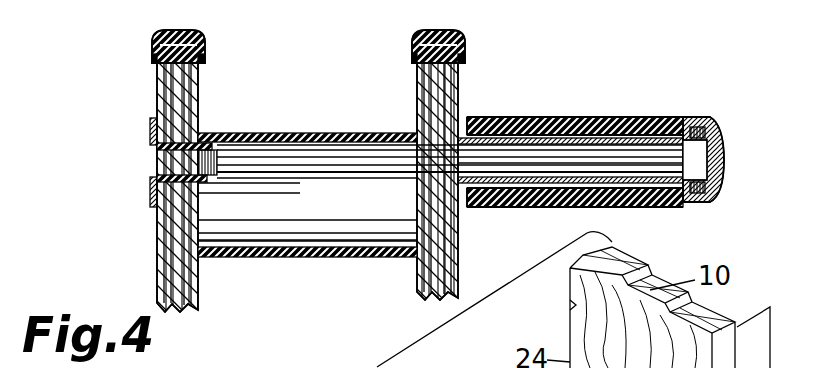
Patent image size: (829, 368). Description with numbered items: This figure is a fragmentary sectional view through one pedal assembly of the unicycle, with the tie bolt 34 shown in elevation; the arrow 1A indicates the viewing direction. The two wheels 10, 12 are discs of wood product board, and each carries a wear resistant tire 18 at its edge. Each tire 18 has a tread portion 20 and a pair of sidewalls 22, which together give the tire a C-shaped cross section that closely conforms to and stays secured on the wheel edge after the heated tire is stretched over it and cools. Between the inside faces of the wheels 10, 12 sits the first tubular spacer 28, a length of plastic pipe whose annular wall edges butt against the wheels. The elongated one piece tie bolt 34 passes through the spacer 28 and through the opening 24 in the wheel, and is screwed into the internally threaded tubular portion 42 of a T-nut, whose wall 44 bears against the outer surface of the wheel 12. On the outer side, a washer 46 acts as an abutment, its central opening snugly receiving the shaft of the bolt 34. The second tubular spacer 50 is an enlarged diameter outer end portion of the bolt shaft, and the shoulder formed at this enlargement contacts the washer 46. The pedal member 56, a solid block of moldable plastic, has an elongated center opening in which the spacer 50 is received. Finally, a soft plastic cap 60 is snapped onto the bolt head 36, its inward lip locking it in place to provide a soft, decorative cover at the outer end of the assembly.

The wheel 10 is at (452, 246).
The wheel 12 is at (157, 233).
The tire 18 is at (233, 47).
The tread portion 20 is at (195, 30).
The sidewalls 22 is at (146, 62).
The opening 24 is at (420, 170).
The first tubular spacer 28 is at (300, 132).
The tie bolt 34 is at (320, 166).
The bolt head 36 is at (722, 165).
The internally threaded tubular portion 42 is at (200, 209).
The wall 44 is at (153, 185).
The washer 46 is at (467, 116).
The second tubular spacer 50 is at (632, 140).
The pedal member 56 is at (575, 118).
The cap 60 is at (697, 117).
The viewing direction arrow 1A is at (292, 280).